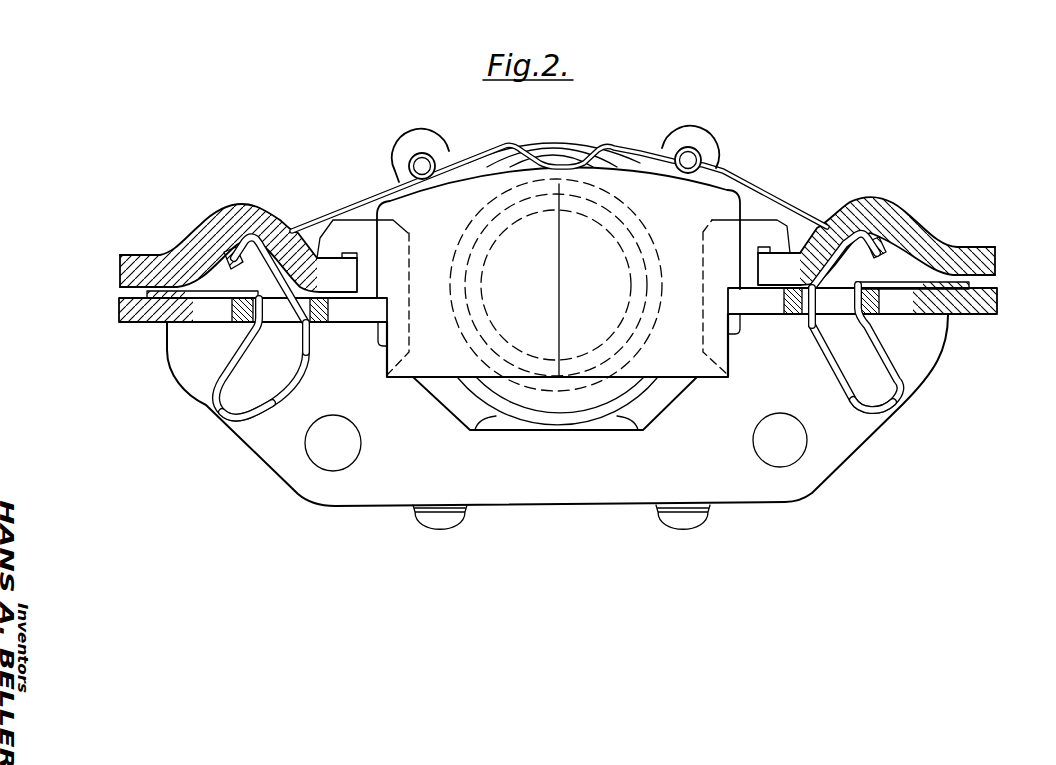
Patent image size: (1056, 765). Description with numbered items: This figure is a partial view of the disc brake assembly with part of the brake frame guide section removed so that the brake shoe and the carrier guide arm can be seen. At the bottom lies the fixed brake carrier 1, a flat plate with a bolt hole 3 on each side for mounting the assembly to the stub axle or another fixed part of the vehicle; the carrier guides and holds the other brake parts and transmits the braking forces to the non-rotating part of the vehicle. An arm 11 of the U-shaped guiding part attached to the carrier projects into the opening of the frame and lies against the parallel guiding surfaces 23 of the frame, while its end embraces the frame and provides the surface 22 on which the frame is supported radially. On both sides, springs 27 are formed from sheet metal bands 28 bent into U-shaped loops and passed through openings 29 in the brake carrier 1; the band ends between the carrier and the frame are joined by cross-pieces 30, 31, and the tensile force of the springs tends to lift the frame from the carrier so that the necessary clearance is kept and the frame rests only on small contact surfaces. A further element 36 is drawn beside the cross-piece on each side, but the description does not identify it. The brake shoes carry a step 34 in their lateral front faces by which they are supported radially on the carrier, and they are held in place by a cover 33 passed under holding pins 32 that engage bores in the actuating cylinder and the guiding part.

The brake carrier 1 is at (572, 482).
The bolt hole 3 is at (320, 457).
The arm of guiding part 11 is at (367, 292).
The surface 22 is at (333, 267).
The guiding surface 23 is at (358, 267).
The spring 27 is at (214, 405).
The sheet metal band 28 is at (237, 358).
The opening 29 is at (280, 317).
The cross-piece 30 is at (119, 301).
The cross-piece 31 is at (233, 257).
The holding pin 32 is at (415, 162).
The cover 33 is at (348, 201).
The step 34 is at (380, 292).
The retaining strip 36 is at (143, 293).